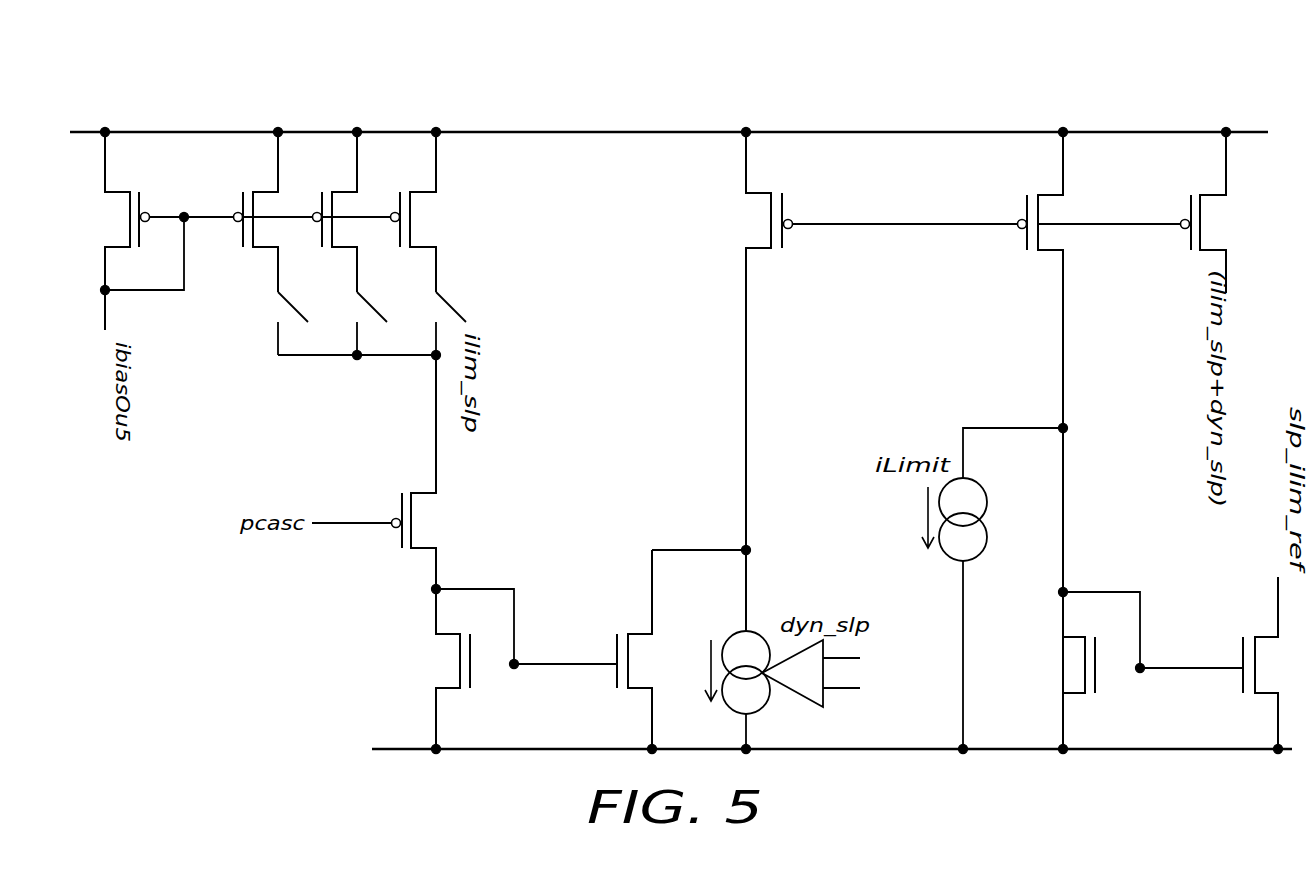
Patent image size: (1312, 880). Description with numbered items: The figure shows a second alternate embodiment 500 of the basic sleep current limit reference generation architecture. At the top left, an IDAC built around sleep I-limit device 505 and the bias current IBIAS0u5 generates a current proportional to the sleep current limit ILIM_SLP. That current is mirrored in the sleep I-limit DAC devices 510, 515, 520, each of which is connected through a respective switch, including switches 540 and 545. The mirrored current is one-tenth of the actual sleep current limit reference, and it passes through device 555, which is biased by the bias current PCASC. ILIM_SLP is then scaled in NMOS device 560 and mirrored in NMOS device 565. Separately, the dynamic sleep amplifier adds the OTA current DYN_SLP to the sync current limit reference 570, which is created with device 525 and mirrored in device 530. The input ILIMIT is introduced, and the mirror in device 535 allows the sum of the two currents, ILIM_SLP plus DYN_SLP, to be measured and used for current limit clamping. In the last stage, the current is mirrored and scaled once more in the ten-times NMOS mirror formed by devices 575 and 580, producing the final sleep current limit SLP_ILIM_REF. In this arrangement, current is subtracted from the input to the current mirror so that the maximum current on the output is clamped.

The second alternate embodiment 500 is at (210, 83).
The sleep I-limit device 505 is at (120, 186).
The sleep I-limit DAC device 510 is at (282, 200).
The sleep I-limit DAC device 515 is at (361, 200).
The sleep I-limit DAC device 520 is at (440, 200).
The device 525 is at (732, 203).
The device 530 is at (436, 299).
The device 535 is at (1245, 205).
The switch 540 is at (278, 299).
The switch 545 is at (357, 299).
The device 555 is at (455, 503).
The NMOS device 560 is at (420, 690).
The NMOS device 565 is at (637, 694).
The sync current limit reference 570 is at (702, 670).
The NMOS mirror device 575 is at (1075, 697).
The NMOS mirror device 580 is at (1258, 628).